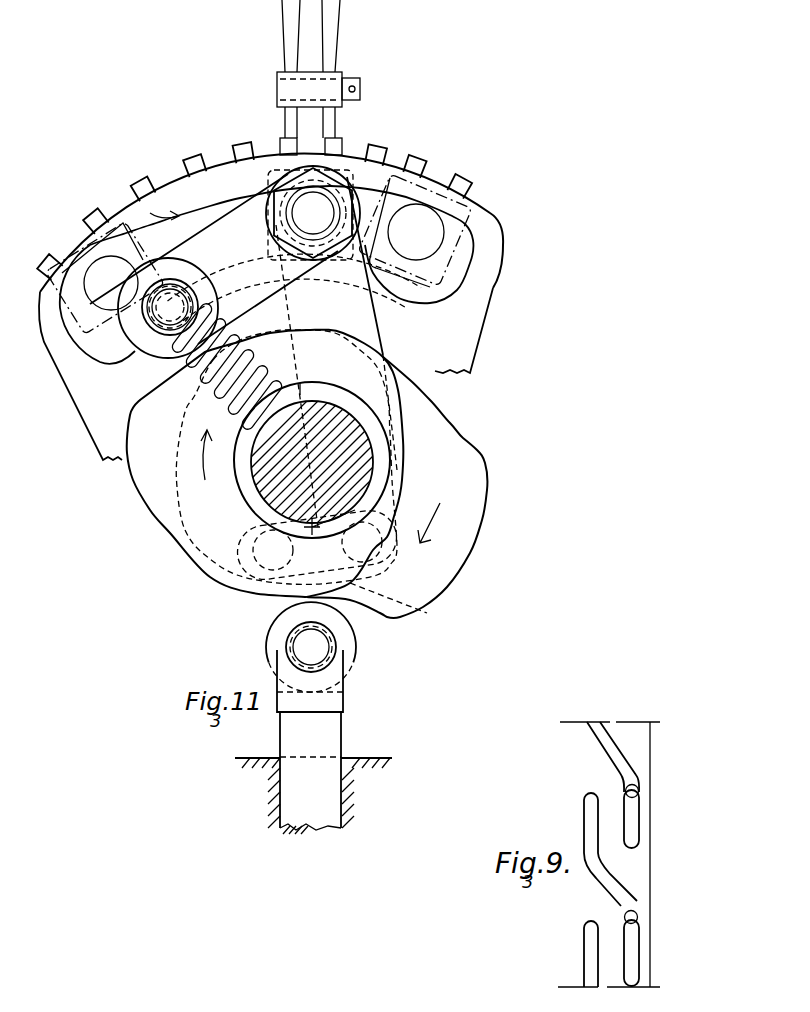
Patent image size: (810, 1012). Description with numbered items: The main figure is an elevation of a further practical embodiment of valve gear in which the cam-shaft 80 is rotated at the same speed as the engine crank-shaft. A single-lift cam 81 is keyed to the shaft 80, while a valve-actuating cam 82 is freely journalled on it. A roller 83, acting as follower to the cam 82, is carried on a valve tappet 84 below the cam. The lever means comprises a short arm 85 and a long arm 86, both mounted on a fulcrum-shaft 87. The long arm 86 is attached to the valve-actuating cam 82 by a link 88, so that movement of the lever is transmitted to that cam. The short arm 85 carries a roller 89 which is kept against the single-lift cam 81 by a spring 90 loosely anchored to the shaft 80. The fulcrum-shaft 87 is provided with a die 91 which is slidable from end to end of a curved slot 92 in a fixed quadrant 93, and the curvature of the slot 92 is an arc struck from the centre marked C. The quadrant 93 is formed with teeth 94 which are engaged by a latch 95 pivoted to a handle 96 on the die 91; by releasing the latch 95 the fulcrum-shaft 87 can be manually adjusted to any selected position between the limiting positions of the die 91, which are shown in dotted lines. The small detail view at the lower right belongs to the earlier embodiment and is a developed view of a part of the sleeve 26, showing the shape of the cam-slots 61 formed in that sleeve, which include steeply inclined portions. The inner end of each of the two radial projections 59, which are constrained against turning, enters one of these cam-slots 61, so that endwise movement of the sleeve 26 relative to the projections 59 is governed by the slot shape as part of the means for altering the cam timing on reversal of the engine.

In FIG. 11, the cam-shaft 80 is at (350, 443).
In FIG. 11, the single-lift cam 81 is at (397, 487).
In FIG. 11, the valve-actuating cam 82 is at (460, 522).
In FIG. 11, the roller 83 is at (350, 660).
In FIG. 11, the valve tappet 84 is at (330, 736).
In FIG. 11, the short arm 85 is at (240, 217).
In FIG. 11, the long arm 86 is at (358, 322).
In FIG. 11, the fulcrum-shaft 87 is at (313, 213).
In FIG. 11, the link 88 is at (426, 614).
In FIG. 11, the roller 89 is at (147, 348).
In FIG. 11, the spring 90 is at (215, 368).
In FIG. 11, the die 91 is at (66, 243).
In FIG. 11, the curved slot 92 is at (150, 213).
In FIG. 11, the fixed quadrant 93 is at (438, 187).
In FIG. 11, the teeth 94 is at (417, 167).
In FIG. 11, the latch 95 is at (308, 133).
In FIG. 11, the handle 96 is at (330, 37).
In FIG. 11, the centre C is at (312, 527).
In FIG. 9, the sleeve 26 is at (600, 765).
In FIG. 9, the cam-slots 61 is at (592, 795).
In FIG. 9, the radial projections 59 is at (636, 912).